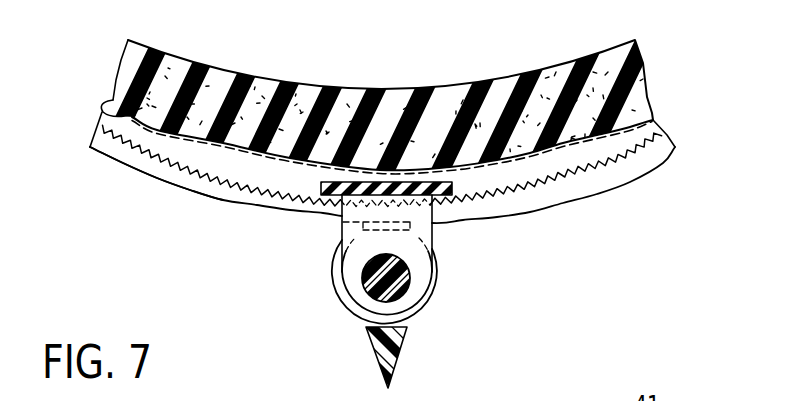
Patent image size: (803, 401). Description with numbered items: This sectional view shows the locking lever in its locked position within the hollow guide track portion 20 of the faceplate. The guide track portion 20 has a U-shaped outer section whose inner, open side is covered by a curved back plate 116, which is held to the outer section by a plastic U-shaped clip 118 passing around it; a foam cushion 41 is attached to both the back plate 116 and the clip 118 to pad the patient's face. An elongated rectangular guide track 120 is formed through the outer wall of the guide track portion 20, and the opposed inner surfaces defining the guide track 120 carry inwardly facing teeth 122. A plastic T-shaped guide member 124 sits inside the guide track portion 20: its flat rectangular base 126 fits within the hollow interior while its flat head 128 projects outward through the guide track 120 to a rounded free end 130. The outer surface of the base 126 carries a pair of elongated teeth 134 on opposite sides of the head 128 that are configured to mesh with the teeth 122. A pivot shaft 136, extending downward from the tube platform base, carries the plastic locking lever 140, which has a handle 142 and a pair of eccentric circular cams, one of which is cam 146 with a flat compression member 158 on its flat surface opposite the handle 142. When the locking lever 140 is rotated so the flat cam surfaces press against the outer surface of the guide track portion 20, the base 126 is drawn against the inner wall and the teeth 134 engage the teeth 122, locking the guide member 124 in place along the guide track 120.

The guide track portion 20 is at (222, 203).
The cushion 41 is at (230, 68).
The back plate 116 is at (100, 122).
The clip 118 is at (450, 181).
The guide track 120 is at (153, 168).
The teeth 122 is at (200, 173).
The guide member 124 is at (432, 236).
The base 126 is at (486, 158).
The head 128 is at (415, 297).
The free end 130 is at (353, 313).
The teeth 134 is at (333, 195).
The pivot shaft 136 is at (396, 276).
The locking lever 140 is at (366, 354).
The handle 142 is at (398, 358).
The cam 146 is at (332, 295).
The flat compression member 158 is at (340, 223).